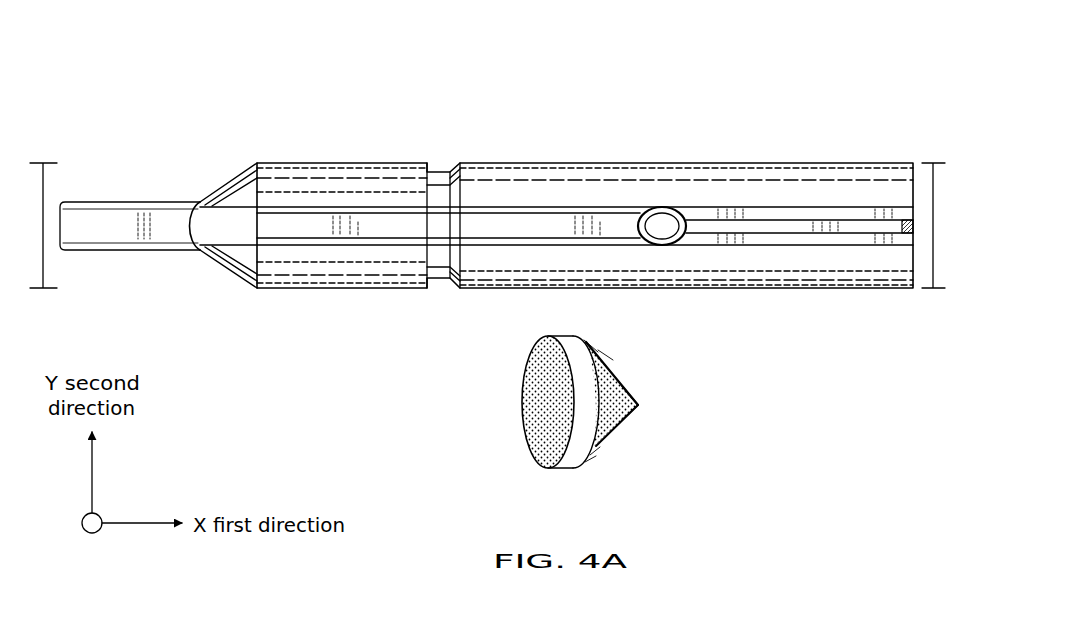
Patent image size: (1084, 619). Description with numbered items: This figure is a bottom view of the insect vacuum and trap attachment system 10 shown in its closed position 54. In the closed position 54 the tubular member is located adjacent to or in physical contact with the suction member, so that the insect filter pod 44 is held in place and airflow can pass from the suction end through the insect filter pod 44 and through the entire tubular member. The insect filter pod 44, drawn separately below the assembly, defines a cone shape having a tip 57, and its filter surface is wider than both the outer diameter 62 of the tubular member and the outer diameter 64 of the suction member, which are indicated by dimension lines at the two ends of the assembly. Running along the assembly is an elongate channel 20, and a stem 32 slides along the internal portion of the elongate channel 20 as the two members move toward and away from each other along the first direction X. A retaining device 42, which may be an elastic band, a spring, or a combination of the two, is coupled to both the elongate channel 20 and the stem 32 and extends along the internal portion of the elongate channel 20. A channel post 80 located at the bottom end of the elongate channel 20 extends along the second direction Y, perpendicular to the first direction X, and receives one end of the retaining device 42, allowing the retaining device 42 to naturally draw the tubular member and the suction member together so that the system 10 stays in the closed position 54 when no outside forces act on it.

The insect vacuum and trap attachment system 10 is at (311, 116).
The closed position 54 is at (378, 136).
The outer diameter of tubular member 62 is at (923, 195).
The retaining device 42 is at (772, 220).
The outer diameter of suction member 64 is at (43, 158).
The stem 32 is at (366, 247).
The channel post 80 is at (906, 242).
The elongate channel 20 is at (772, 247).
The insect filter pod 44 is at (535, 421).
The tip 57 is at (640, 412).